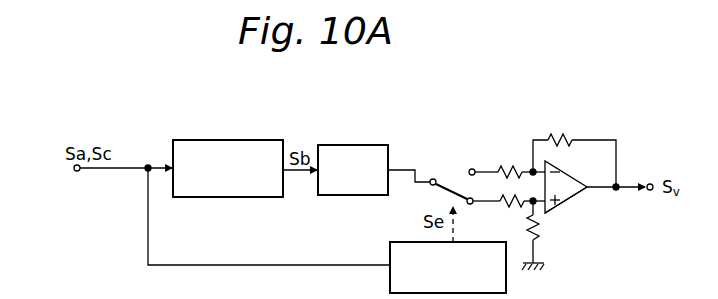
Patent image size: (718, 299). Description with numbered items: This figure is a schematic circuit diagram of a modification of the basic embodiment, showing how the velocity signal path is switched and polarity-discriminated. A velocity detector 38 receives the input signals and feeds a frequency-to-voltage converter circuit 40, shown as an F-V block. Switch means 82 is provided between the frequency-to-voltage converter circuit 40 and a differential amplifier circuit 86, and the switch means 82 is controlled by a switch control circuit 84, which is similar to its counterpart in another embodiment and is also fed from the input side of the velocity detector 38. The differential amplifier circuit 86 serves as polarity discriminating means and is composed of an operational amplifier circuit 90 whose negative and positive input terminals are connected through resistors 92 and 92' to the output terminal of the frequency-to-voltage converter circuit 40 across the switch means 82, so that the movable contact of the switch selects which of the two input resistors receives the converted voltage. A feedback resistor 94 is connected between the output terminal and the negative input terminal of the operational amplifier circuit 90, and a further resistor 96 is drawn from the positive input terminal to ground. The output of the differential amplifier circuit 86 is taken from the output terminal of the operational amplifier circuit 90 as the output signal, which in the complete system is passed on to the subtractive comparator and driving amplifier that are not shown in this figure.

The velocity detector 38 is at (221, 198).
The frequency-to-voltage converter circuit 40 is at (350, 196).
The switch means 82 is at (453, 168).
The switch control circuit 84 is at (388, 283).
The differential amplifier circuit 86 is at (612, 170).
The operational amplifier circuit 90 is at (577, 203).
The resistor 92 is at (510, 156).
The resistor 92' is at (509, 217).
The feedback resistor 94 is at (559, 137).
The resistor 96 is at (543, 236).